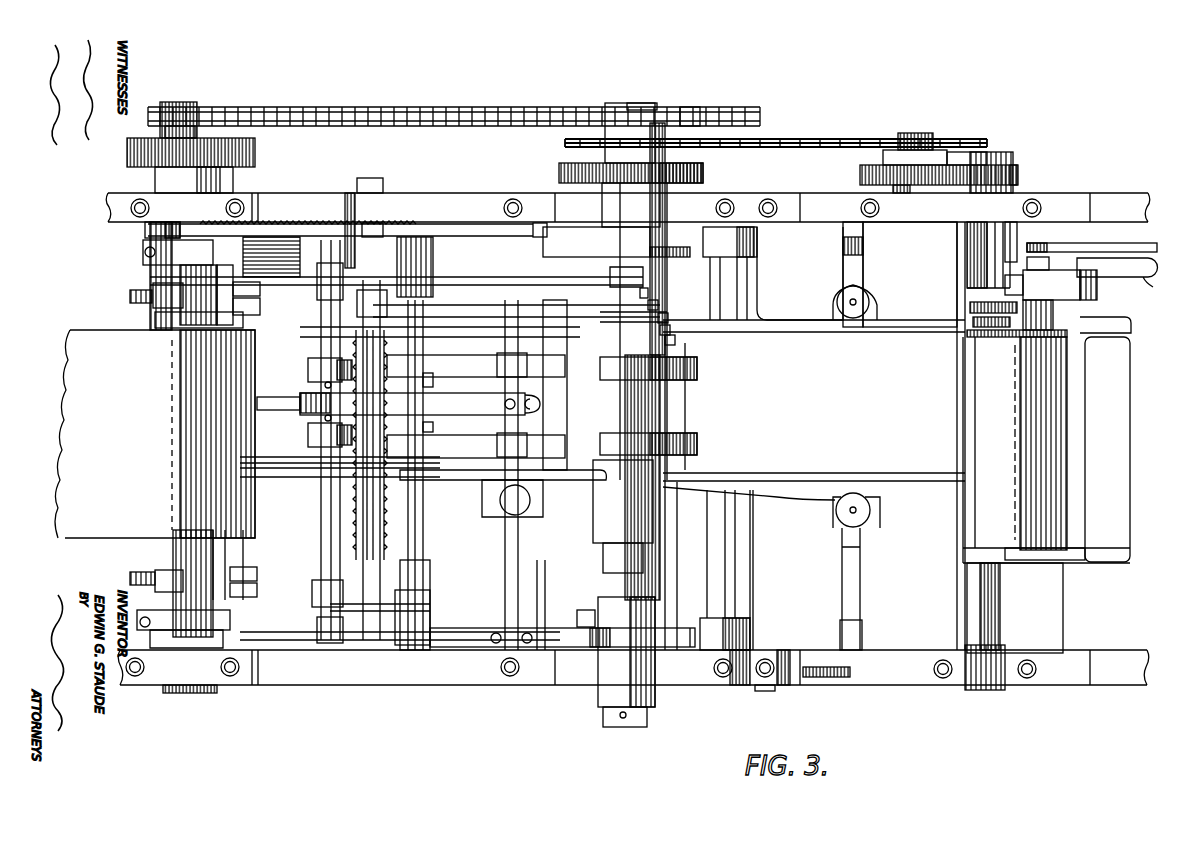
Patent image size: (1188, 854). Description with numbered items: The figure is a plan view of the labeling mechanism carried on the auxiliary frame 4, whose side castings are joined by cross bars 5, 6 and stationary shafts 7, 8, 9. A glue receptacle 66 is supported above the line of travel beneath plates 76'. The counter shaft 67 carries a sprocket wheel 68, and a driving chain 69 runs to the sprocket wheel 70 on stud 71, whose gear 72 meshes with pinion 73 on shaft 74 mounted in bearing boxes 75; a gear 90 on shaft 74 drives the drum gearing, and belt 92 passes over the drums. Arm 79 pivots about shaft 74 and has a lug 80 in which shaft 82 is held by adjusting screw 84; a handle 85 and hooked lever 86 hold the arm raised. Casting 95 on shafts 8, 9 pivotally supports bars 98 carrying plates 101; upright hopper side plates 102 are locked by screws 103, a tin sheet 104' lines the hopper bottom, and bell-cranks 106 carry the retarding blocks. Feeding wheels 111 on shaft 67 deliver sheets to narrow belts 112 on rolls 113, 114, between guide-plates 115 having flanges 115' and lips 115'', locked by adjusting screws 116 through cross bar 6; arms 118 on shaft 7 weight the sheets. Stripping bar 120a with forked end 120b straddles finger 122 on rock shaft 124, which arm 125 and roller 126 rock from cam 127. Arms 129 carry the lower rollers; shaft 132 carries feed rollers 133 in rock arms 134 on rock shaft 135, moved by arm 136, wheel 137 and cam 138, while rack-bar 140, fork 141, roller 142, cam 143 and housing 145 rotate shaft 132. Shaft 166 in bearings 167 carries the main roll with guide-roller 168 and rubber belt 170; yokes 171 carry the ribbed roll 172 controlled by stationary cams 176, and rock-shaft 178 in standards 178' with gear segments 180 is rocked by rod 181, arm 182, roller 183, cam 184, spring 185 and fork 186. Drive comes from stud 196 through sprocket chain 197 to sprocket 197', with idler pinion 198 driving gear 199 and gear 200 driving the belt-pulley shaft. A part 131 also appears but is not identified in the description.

The auxiliary frame 4 is at (291, 200).
The cross bar 5 is at (263, 618).
The cross bar 6 is at (497, 538).
The stationary shaft 7 is at (450, 655).
The stationary shaft 8 is at (728, 555).
The stationary shaft 9 is at (770, 691).
The glue receptacle 66 is at (1133, 302).
The counter shaft 67 is at (620, 510).
The sprocket wheel 68 is at (575, 145).
The driving chain 69 is at (826, 139).
The sprocket wheel 70 is at (957, 140).
The stud 71 is at (920, 133).
The gear 72 is at (862, 174).
The pinion 73 is at (1017, 173).
The shaft 74 is at (993, 593).
The bearing boxes 75 is at (985, 210).
The plates 76' is at (1047, 608).
The arm 79 is at (1012, 213).
The lug 80 is at (1063, 283).
The shaft 82 is at (1005, 283).
The adjusting screw 84 is at (1037, 260).
The handle 85 is at (1153, 287).
The lever 86 is at (1103, 244).
The gear 90 is at (967, 307).
The belt 92 is at (1050, 408).
The casting 95 is at (735, 240).
The bars 98 is at (855, 248).
The plates 101 is at (815, 436).
The upright plates 102 is at (905, 338).
The screws 103 is at (870, 300).
The sheet 104' is at (1037, 450).
The bell-cranks 106 is at (673, 340).
The feeding wheels 111 is at (655, 372).
The belts 112 is at (548, 437).
The rolls 113 is at (600, 502).
The rolls 114 is at (430, 386).
The guide-plates 115 is at (440, 366).
The flange 115' is at (323, 408).
The lip 115'' is at (410, 412).
The adjusting screws 116 is at (505, 296).
The arm 118 is at (455, 358).
The bar 120a is at (265, 344).
The forked end 120b is at (300, 387).
The finger 122 is at (265, 405).
The rock shaft 124 is at (370, 535).
The arm 125 is at (488, 285).
The roller 126 is at (668, 330).
The cam 127 is at (665, 318).
The arms 129 is at (350, 248).
The rod 131 is at (372, 522).
The shaft 132 is at (340, 515).
The feed rollers 133 is at (308, 437).
The rock arms 134 is at (357, 240).
The rock shaft 135 is at (425, 548).
The arm 136 is at (478, 297).
The wheel 137 is at (655, 305).
The cam 138 is at (645, 293).
The rack-bar 140 is at (432, 655).
The fork 141 is at (613, 635).
The roller 142 is at (580, 615).
The cam 143 is at (610, 612).
The housing 145 is at (370, 643).
The shaft 166 is at (192, 693).
The bearings 167 is at (180, 640).
The guide-roller 168 is at (225, 537).
The belt 170 is at (80, 438).
The swinging yokes 171 is at (248, 290).
The roll 172 is at (250, 299).
The stationary cam 176 is at (193, 278).
The rock-shaft 178 is at (111, 301).
The standards 178' is at (126, 431).
The gear segments 180 is at (130, 295).
The rod 181 is at (465, 277).
The arm 182 is at (163, 237).
The roller 183 is at (565, 240).
The cam 184 is at (592, 255).
The spring 185 is at (442, 227).
The fork 186 is at (580, 238).
The stud 196 is at (160, 145).
The sprocket chain 197 is at (454, 93).
The sprocket 197' is at (717, 98).
The idler pinion 198 is at (257, 158).
The gear 199 is at (167, 143).
The gear 200 is at (690, 167).